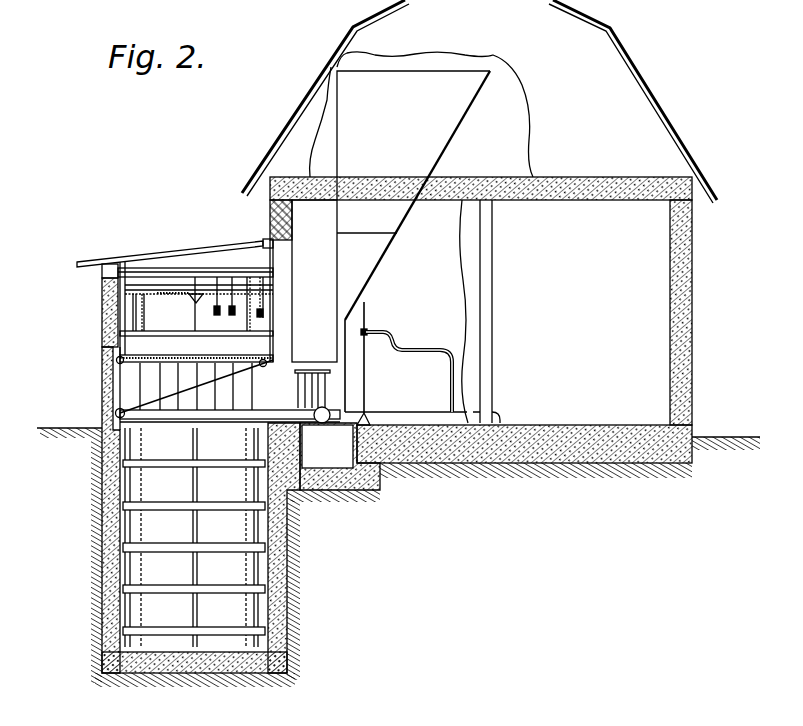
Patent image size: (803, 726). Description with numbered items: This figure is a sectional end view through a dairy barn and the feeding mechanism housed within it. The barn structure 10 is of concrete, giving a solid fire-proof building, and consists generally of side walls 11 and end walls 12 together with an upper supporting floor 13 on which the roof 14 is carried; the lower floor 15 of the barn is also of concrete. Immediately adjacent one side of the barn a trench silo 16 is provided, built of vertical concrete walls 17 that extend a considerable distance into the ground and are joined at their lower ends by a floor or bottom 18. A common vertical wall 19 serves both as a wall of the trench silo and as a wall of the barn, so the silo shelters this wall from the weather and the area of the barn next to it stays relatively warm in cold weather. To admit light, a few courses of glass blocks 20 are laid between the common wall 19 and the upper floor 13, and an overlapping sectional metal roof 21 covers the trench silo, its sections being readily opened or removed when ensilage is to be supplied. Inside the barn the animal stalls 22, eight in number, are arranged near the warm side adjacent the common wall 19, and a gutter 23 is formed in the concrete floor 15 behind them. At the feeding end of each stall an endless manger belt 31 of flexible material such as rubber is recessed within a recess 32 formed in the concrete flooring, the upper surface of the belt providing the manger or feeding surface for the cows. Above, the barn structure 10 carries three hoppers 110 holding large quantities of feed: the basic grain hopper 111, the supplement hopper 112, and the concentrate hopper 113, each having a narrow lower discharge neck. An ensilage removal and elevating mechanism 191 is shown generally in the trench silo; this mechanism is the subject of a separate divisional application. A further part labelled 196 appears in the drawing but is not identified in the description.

The barn structure 10 is at (700, 317).
The side walls 11 is at (692, 360).
The end walls 12 is at (662, 252).
The upper supporting floor 13 is at (590, 180).
The roof 14 is at (652, 100).
The lower floor 15 is at (370, 490).
The trench silo 16 is at (294, 598).
The vertical concrete walls 17 is at (93, 619).
The floor or bottom 18 is at (258, 673).
The common vertical wall 19 is at (285, 281).
The glass blocks 20 is at (272, 208).
The overlapping sectional metal roof 21 is at (153, 250).
The animal stalls 22 is at (412, 360).
The gutter 23 is at (532, 428).
The manger belt 31 is at (387, 472).
The recess 32 is at (317, 492).
The hoppers 110 is at (392, 259).
The basic grain hopper 111 is at (447, 132).
The supplement hopper 112 is at (393, 222).
The concentrate hopper 113 is at (367, 275).
The ensilage removal and elevating mechanism 191 is at (127, 320).
The beam 196 is at (275, 262).